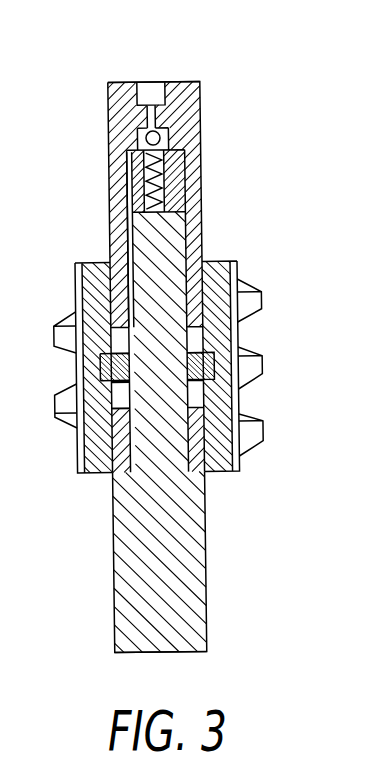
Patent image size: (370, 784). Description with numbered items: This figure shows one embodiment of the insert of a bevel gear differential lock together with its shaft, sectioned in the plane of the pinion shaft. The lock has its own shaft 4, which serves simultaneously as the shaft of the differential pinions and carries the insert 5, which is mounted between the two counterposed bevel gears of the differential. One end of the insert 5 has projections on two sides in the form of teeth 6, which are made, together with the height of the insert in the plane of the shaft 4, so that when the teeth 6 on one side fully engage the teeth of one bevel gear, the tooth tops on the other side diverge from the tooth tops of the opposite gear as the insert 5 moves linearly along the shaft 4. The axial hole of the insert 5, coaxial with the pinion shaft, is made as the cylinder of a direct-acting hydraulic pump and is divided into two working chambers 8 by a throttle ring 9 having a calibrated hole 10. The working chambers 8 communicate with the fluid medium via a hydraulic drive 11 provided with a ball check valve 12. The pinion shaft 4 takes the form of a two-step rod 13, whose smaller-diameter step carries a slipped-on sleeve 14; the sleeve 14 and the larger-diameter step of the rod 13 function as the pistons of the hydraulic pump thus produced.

The shaft 4 is at (165, 70).
The insert 5 is at (100, 461).
The teeth 6 is at (62, 329).
The working chambers 8 is at (83, 420).
The throttle ring 9 is at (237, 348).
The calibrated hole 10 is at (104, 369).
The hydraulic drive 11 is at (126, 214).
The ball check valve 12 is at (147, 134).
The two-step rod 13 is at (184, 529).
The sleeve 14 is at (187, 163).